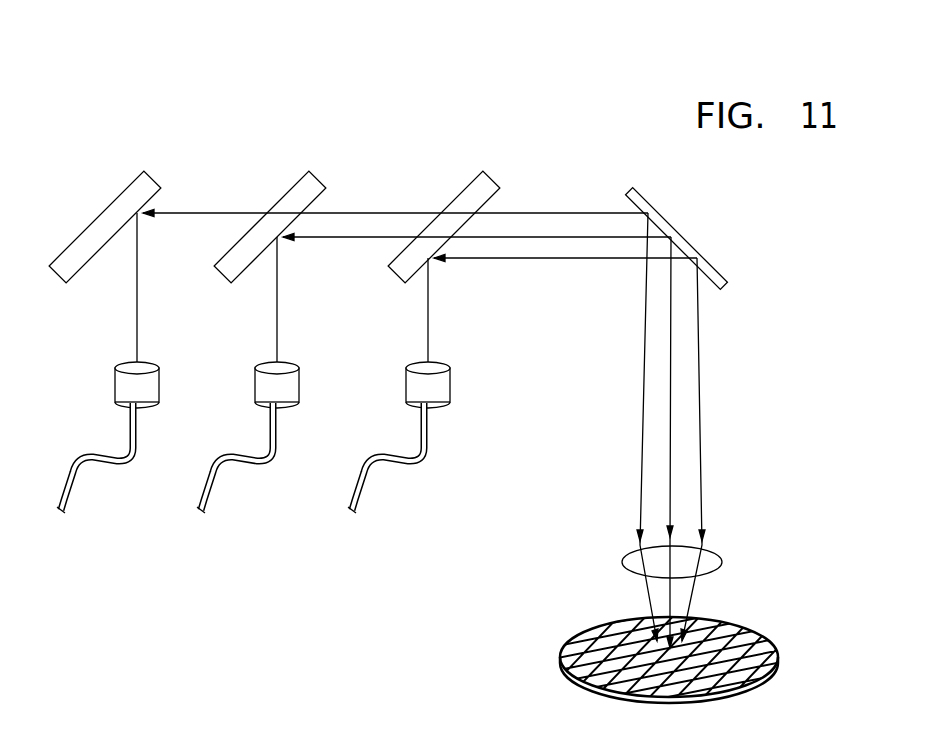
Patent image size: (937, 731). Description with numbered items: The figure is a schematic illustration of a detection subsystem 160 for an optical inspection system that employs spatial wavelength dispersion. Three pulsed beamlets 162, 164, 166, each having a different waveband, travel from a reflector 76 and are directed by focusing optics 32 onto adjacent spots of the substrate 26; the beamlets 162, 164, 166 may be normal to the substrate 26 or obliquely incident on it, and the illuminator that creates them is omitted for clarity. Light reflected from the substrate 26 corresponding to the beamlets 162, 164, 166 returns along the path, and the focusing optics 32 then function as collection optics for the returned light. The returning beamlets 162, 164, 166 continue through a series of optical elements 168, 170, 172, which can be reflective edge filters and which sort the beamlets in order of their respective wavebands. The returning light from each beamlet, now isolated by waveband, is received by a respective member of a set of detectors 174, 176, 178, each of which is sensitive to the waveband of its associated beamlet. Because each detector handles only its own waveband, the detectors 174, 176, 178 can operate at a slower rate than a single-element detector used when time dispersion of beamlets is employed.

The detection subsystem 160 is at (595, 83).
The optical element 168 is at (158, 183).
The optical element 170 is at (320, 183).
The optical element 172 is at (497, 183).
The reflector 76 is at (695, 248).
The detector 174 is at (112, 397).
The detector 176 is at (252, 397).
The detector 178 is at (403, 397).
The pulsed beamlet 162 is at (640, 397).
The pulsed beamlet 164 is at (701, 357).
The pulsed beamlet 166 is at (673, 455).
The focusing optics 32 is at (623, 560).
The substrate 26 is at (757, 633).